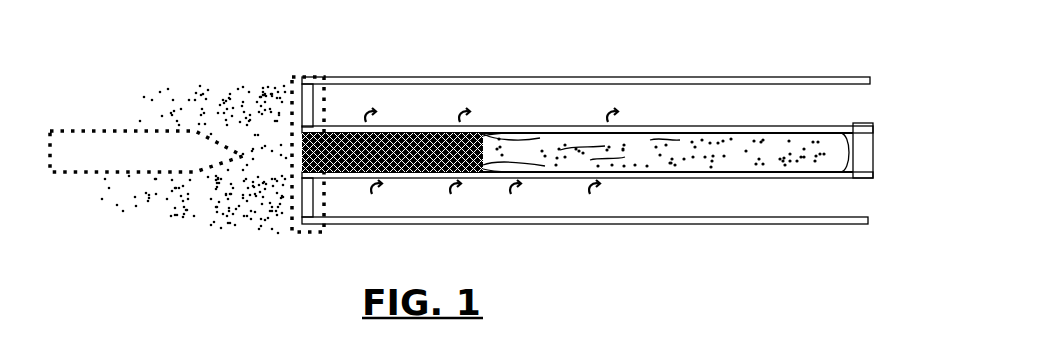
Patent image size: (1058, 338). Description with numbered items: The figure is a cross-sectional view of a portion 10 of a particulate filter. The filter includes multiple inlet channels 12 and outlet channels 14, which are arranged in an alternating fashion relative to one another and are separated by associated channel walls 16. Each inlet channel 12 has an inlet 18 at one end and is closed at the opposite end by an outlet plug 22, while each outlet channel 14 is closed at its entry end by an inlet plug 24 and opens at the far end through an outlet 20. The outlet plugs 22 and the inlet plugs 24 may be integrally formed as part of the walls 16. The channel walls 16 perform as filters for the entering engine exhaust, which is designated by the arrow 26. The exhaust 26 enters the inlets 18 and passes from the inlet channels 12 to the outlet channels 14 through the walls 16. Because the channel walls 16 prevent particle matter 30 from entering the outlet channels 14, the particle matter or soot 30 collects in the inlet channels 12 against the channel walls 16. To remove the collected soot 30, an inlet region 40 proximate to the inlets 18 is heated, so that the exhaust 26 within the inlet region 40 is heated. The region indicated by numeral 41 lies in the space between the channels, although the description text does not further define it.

The portion of a particulate filter 10 is at (805, 45).
The inlet channel 12 is at (533, 147).
The outlet channel 14 is at (845, 113).
The channel wall 16 is at (793, 178).
The inlet 18 is at (300, 130).
The outlet 20 is at (870, 80).
The outlet plug 22 is at (858, 178).
The inlet plug 24 is at (302, 93).
The engine exhaust 26 is at (50, 178).
The particle matter 30 is at (780, 153).
The inlet region 40 is at (320, 232).
The gap between outer shell and inner tube 41 is at (403, 124).